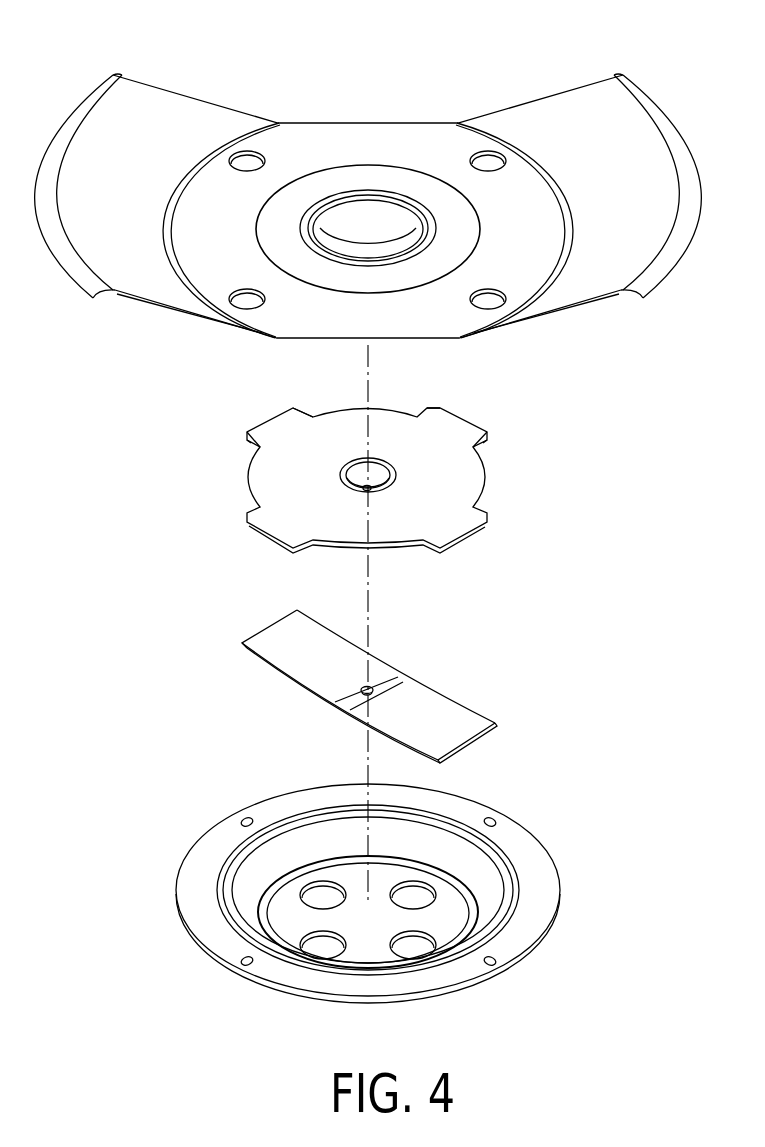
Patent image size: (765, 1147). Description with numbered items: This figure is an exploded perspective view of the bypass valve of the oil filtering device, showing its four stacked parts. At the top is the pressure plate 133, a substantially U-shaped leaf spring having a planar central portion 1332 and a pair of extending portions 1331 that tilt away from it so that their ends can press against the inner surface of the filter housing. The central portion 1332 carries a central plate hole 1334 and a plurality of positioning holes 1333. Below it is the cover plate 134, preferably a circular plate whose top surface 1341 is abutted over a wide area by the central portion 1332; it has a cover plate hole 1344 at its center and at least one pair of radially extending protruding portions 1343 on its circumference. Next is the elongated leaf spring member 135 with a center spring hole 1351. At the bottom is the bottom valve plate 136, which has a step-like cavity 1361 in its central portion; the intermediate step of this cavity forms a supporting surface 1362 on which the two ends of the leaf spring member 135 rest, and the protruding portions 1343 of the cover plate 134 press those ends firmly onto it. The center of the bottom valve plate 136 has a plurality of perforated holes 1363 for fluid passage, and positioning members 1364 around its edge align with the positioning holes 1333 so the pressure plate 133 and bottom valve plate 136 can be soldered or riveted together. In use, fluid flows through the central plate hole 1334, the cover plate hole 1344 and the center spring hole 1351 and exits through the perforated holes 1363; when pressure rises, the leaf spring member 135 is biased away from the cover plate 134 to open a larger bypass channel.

The pressure plate 133 is at (368, 172).
The extending portions 1331 is at (77, 108).
The central portion 1332 is at (345, 143).
The positioning holes 1333 is at (243, 160).
The central plate hole 1334 is at (382, 230).
The cover plate 134 is at (378, 451).
The top surface 1341 is at (403, 440).
The protruding portions 1343 is at (277, 423).
The cover plate hole 1344 is at (342, 477).
The leaf spring member 135 is at (334, 682).
The center spring hole 1351 is at (368, 687).
The bottom valve plate 136 is at (422, 869).
The step-like cavity 1361 is at (448, 898).
The supporting surface 1362 is at (497, 903).
The perforated holes 1363 is at (322, 893).
The positioning members 1364 is at (247, 818).